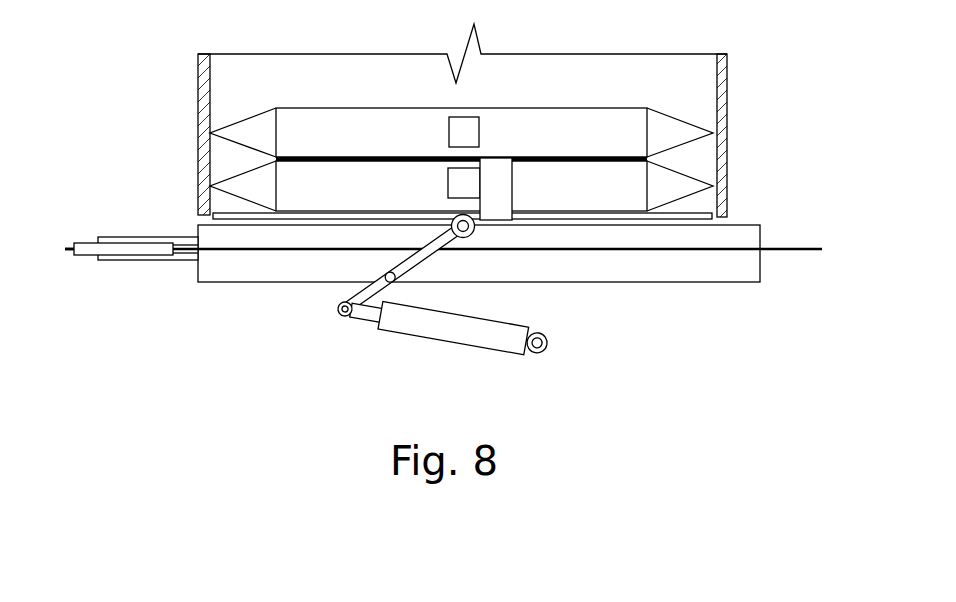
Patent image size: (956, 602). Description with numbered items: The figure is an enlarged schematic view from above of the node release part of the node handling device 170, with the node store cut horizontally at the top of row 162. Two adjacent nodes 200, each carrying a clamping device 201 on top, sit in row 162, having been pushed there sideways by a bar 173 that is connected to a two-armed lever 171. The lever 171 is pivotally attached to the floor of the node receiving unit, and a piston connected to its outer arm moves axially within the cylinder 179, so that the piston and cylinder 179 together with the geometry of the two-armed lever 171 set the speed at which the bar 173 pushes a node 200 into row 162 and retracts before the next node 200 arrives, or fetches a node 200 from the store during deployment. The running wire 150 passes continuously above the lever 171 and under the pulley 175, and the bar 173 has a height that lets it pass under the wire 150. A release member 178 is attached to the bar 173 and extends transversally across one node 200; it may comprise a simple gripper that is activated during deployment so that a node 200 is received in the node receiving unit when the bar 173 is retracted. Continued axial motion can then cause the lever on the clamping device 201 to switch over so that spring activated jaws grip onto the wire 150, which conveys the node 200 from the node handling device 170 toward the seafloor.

The wire 150 is at (800, 247).
The row 162 is at (603, 97).
The node handling device 170 is at (740, 181).
The two-armed lever 171 is at (417, 258).
The bar 173 is at (305, 216).
The pulley 175 is at (82, 240).
The release member 178 is at (497, 173).
The cylinder 179 is at (448, 333).
The node 200 is at (332, 148).
The clamping device 201 is at (449, 129).